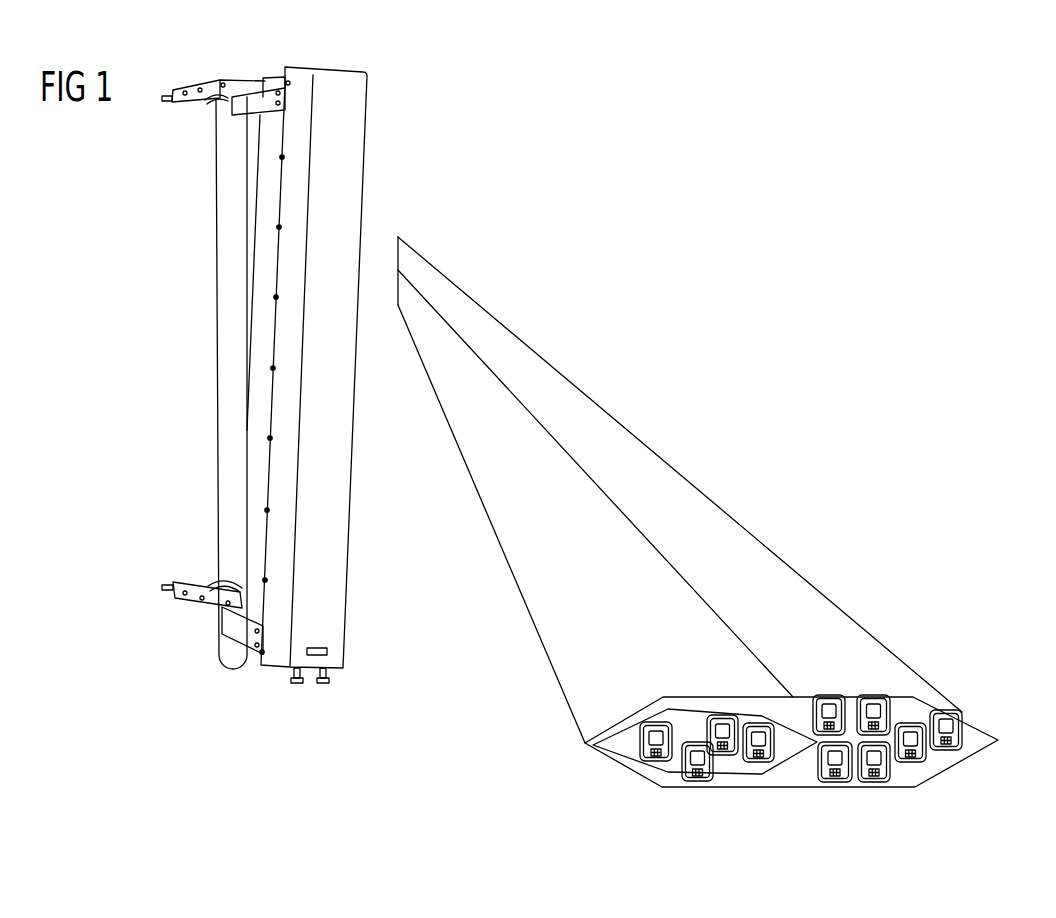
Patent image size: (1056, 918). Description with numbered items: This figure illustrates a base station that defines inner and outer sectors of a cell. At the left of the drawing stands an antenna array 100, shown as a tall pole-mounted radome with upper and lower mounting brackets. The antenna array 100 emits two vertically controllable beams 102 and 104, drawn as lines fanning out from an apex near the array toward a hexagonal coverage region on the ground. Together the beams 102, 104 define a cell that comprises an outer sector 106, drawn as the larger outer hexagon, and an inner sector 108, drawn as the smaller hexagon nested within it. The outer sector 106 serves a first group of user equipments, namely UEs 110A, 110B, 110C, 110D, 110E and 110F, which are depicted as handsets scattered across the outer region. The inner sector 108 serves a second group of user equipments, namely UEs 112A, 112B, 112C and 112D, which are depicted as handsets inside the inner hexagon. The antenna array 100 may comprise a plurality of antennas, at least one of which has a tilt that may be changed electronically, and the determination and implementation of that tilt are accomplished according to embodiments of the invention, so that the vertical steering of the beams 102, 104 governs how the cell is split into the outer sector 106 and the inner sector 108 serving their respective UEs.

The antenna array 100 is at (418, 123).
The vertically controllable beam 102 is at (453, 292).
The vertically controllable beam 104 is at (440, 387).
The outer sector 106 is at (600, 755).
The inner sector 108 is at (635, 772).
The UE 110A is at (816, 697).
The UE 110B is at (880, 697).
The UE 110C is at (833, 783).
The UE 110D is at (875, 783).
The UE 110E is at (927, 755).
The UE 110F is at (960, 710).
The UE 112A is at (658, 719).
The UE 112B is at (698, 781).
The UE 112C is at (720, 716).
The UE 112D is at (758, 724).